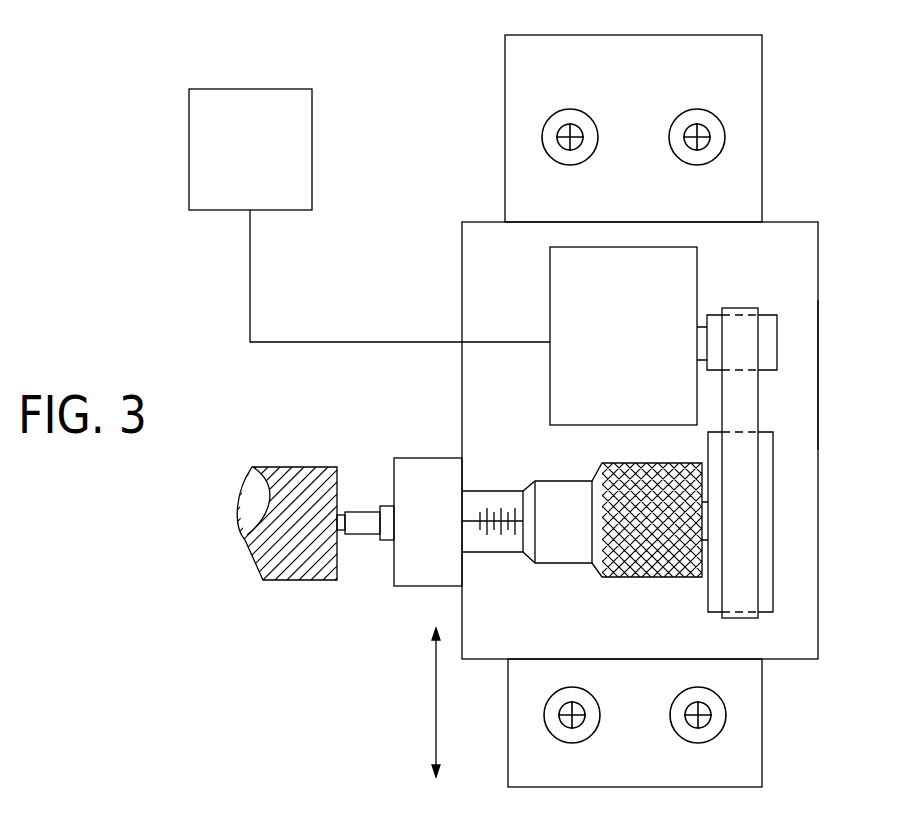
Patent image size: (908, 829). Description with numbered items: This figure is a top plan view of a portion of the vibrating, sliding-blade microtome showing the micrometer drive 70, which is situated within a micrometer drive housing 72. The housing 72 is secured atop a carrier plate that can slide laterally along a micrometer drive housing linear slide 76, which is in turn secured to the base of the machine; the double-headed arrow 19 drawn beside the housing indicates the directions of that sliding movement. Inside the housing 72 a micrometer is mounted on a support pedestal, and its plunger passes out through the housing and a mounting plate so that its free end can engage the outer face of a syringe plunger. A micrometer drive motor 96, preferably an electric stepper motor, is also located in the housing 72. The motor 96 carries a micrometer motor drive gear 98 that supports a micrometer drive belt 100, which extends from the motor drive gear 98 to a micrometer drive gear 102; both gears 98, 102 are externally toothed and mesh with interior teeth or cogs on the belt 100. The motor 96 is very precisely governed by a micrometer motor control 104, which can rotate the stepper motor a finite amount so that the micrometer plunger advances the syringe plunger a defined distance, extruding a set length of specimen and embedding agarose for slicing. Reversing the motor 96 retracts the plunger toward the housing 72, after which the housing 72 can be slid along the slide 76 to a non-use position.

The direction of movement 19 is at (420, 702).
The micrometer drive 70 is at (798, 261).
The micrometer drive housing 72 is at (818, 376).
The micrometer drive housing linear slide 76 is at (754, 730).
The micrometer drive motor 96 is at (673, 293).
The micrometer motor drive gear 98 is at (777, 336).
The micrometer drive belt 100 is at (746, 403).
The micrometer drive gear 102 is at (773, 520).
The micrometer motor control 104 is at (282, 143).